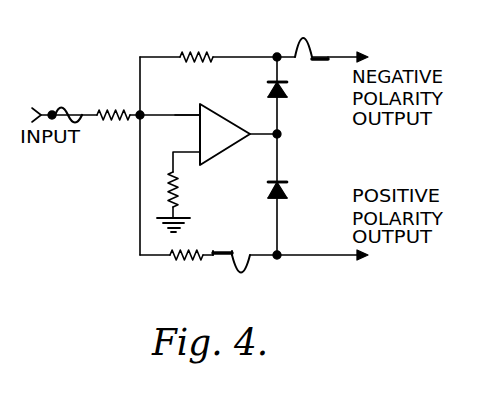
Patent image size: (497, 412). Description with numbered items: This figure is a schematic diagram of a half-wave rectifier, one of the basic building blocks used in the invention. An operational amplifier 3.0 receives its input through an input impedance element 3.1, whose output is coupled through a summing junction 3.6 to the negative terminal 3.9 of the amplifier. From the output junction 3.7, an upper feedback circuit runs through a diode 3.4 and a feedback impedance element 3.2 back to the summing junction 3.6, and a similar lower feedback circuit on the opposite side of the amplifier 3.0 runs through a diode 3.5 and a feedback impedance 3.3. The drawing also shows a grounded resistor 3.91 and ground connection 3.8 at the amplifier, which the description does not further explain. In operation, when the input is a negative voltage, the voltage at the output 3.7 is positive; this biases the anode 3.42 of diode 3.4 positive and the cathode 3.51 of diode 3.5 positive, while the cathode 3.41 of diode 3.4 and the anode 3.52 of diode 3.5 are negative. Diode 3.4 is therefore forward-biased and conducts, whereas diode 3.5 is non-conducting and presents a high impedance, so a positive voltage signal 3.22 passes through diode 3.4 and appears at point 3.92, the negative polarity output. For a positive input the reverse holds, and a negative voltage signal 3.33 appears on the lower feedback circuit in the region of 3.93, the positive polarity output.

The operational amplifier 3.0 is at (52, 111).
The input impedance element 3.1 is at (107, 112).
The feedback impedance element 3.2 is at (193, 54).
The positive voltage signal 3.22 is at (311, 50).
The feedback impedance 3.3 is at (175, 258).
The negative voltage signal 3.33 is at (238, 264).
The diode 3.4 is at (286, 90).
The cathode 3.41 is at (268, 82).
The anode 3.42 is at (280, 98).
The diode 3.5 is at (287, 185).
The cathode 3.51 is at (270, 181).
The anode 3.52 is at (271, 198).
The summing junction 3.6 is at (142, 112).
The output junction 3.7 is at (281, 134).
The ground connection 3.8 is at (168, 190).
The negative terminal 3.9 is at (197, 118).
The grounding resistor 3.91 is at (200, 160).
The point 3.92 is at (277, 53).
The region 3.93 is at (280, 258).